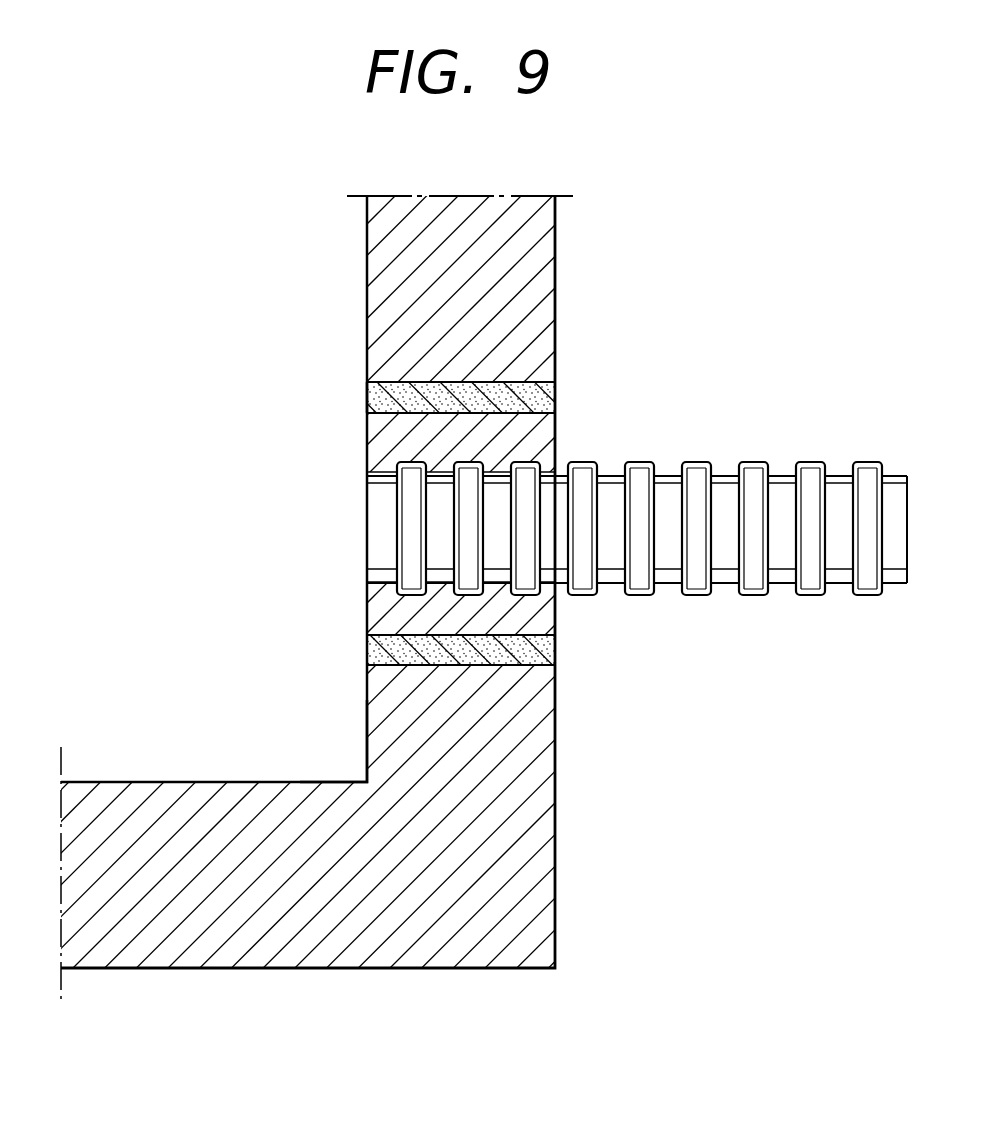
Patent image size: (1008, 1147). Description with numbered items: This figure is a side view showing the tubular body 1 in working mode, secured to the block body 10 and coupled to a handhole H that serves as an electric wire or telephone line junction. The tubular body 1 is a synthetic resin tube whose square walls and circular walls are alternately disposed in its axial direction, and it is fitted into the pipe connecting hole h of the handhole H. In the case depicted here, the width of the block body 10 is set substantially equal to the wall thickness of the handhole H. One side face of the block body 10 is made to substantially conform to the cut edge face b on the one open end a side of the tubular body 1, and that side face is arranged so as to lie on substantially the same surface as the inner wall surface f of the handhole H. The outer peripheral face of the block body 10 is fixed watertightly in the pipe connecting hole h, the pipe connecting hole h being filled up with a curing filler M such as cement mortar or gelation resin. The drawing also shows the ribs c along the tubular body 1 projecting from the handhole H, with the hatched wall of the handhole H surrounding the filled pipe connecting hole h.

The handhole H is at (504, 573).
The pipe connecting hole h is at (367, 402).
The curing filler M is at (555, 395).
The block body 10 is at (540, 440).
The cut edge face b is at (368, 483).
The inner wall surface f is at (365, 721).
The tubular body 1 is at (637, 546).
The open end a is at (498, 543).
The annular rib c is at (752, 590).